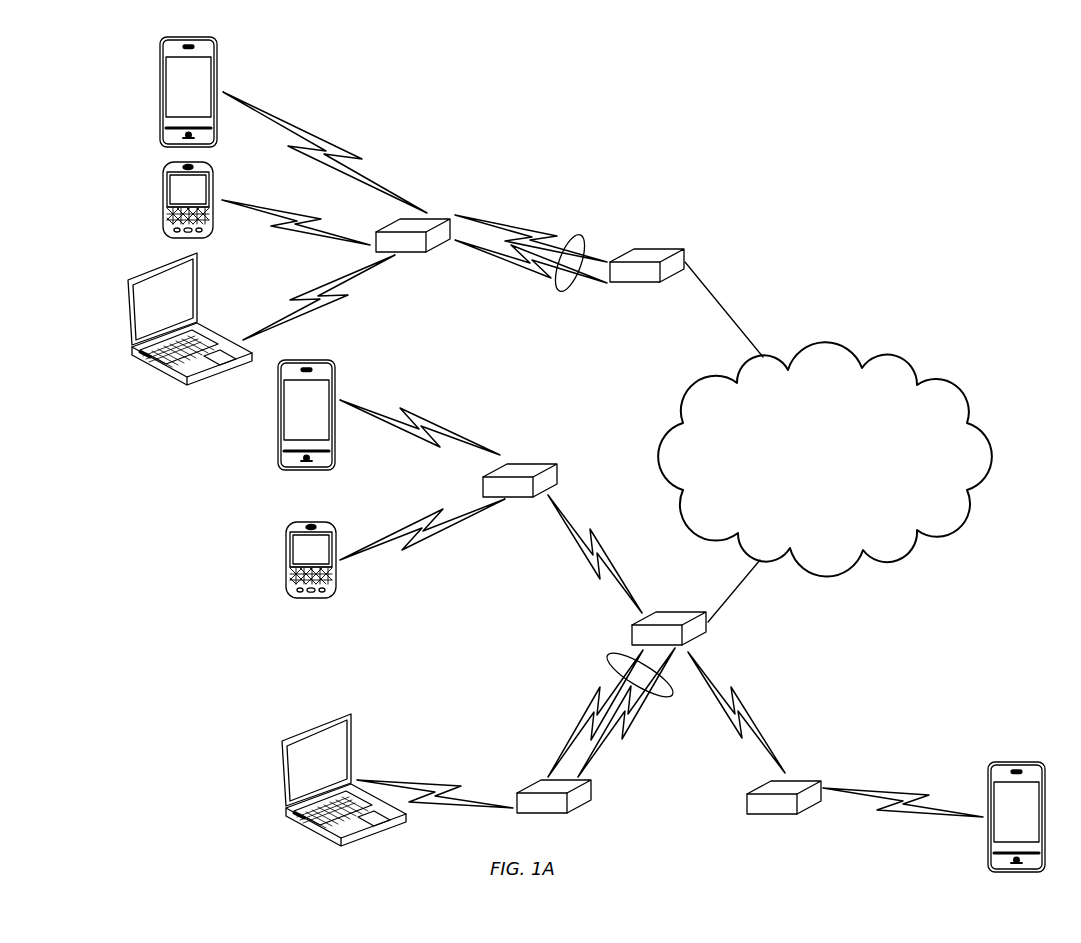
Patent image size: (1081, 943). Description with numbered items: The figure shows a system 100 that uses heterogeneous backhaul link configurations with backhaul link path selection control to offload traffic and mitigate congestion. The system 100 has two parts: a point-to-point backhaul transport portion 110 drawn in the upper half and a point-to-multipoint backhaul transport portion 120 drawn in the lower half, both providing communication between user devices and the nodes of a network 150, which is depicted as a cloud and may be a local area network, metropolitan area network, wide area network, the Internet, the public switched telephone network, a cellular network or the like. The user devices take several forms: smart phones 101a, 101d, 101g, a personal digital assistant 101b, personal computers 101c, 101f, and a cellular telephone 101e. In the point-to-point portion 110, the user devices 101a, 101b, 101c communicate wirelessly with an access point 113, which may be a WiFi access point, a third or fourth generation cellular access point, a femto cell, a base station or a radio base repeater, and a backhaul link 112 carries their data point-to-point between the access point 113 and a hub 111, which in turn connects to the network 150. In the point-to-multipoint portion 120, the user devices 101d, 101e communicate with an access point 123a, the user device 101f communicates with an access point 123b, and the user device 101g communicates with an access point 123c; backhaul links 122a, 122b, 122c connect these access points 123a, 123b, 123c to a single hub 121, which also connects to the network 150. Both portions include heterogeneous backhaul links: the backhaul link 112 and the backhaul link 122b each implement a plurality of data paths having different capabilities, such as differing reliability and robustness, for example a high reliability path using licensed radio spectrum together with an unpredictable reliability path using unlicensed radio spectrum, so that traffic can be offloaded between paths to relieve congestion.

The system 100 is at (910, 170).
The user device 101a is at (160, 89).
The user device 101b is at (163, 195).
The user device 101c is at (128, 310).
The user device 101d is at (278, 413).
The user device 101e is at (286, 556).
The user device 101f is at (282, 773).
The user device 101g is at (988, 838).
The point-to-point backhaul transport portion 110 is at (690, 233).
The hub 111 is at (640, 283).
The backhaul link 112 is at (555, 290).
The access point 113 is at (418, 252).
The point-to-multipoint backhaul transport portion 120 is at (825, 766).
The hub 121 is at (700, 638).
The backhaul link 122a is at (618, 583).
The backhaul link 122b is at (608, 658).
The backhaul link 122c is at (763, 750).
The access point 123a is at (557, 473).
The access point 123b is at (592, 788).
The access point 123c is at (746, 797).
The network 150 is at (843, 474).